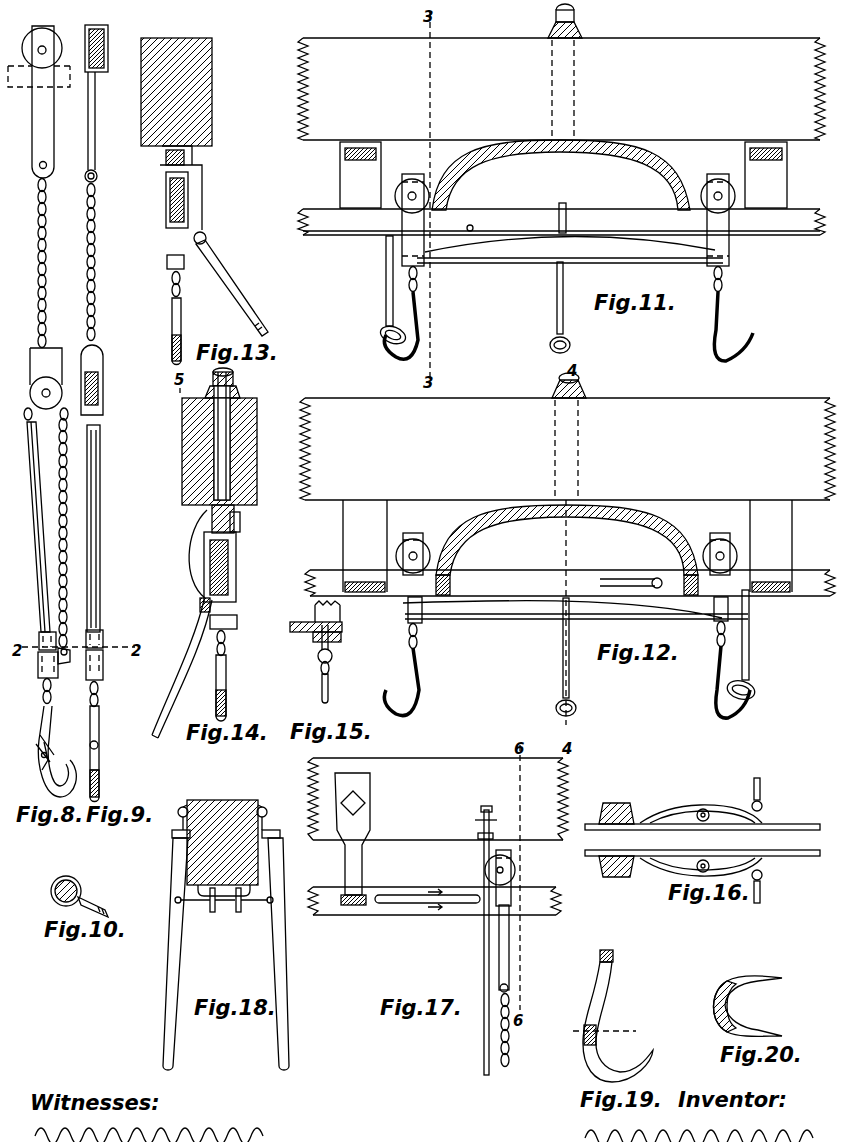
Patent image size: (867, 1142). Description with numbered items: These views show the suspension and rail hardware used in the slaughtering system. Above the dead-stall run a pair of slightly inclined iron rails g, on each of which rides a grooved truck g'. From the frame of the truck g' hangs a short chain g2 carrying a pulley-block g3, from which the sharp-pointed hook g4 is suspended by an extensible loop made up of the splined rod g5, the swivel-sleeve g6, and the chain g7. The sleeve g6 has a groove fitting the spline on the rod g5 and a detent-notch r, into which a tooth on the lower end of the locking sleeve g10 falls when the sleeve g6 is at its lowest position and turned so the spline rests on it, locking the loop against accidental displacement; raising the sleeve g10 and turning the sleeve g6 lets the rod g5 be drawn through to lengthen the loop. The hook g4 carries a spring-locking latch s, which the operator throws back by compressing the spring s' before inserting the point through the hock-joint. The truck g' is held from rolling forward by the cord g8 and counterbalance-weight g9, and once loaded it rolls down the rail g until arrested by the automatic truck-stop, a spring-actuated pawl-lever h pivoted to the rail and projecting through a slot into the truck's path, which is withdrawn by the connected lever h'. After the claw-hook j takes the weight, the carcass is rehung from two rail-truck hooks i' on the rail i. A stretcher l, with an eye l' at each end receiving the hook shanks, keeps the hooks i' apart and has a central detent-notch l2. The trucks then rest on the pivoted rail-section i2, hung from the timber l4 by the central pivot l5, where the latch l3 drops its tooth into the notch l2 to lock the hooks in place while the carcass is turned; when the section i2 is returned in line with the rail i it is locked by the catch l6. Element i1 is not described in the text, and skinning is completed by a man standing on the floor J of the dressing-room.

In FIG. 17, the inclined iron rail g is at (434, 901).
In FIG. 16, the inclined iron rail g is at (702, 839).
In FIG. 18, the inclined iron rail g is at (225, 890).
In FIG. 8, the grooved truck g' is at (42, 101).
In FIG. 9, the grooved truck g' is at (106, 103).
In FIG. 17, the grooved truck g' is at (515, 878).
In FIG. 9, the short chain g2 is at (103, 262).
In FIG. 17, the short chain g2 is at (513, 986).
In FIG. 8, the pulley-block g3 is at (46, 384).
In FIG. 9, the pulley-block g3 is at (103, 380).
In FIG. 8, the sharp-pointed hook g4 is at (30, 788).
In FIG. 9, the sharp-pointed hook g4 is at (107, 780).
In FIG. 8, the splined rod g5 is at (32, 510).
In FIG. 9, the splined rod g5 is at (105, 528).
In FIG. 10, the splined rod g5 is at (51, 889).
In FIG. 9, the swivel-sleeve g6 is at (103, 668).
In FIG. 10, the swivel-sleeve g6 is at (82, 889).
In FIG. 8, the chain g7 is at (74, 533).
In FIG. 8, the cord g8 is at (39, 641).
In FIG. 8, the counterbalance-weight g9 is at (39, 678).
In FIG. 9, the locking sleeve g10 is at (103, 641).
In FIG. 8, the detent-notch r is at (70, 660).
In FIG. 8, the spring-locking latch s is at (51, 756).
In FIG. 8, the spring s' is at (35, 719).
In FIG. 9, the spring s' is at (105, 754).
In FIG. 17, the pawl-lever h is at (427, 889).
In FIG. 16, the pawl-lever h is at (701, 840).
In FIG. 18, the pawl-lever h is at (224, 915).
In FIG. 17, the lever h' is at (484, 940).
In FIG. 16, the lever h' is at (764, 839).
In FIG. 18, the lever h' is at (229, 954).
In FIG. 11, the rail i is at (561, 222).
In FIG. 12, the rail i is at (570, 583).
In FIG. 13, the rail-truck hook i' is at (167, 318).
In FIG. 14, the rail-truck hook i' is at (228, 676).
In FIG. 15, the rail-truck hook i' is at (336, 661).
In FIG. 11, the rail-truck hook i' is at (568, 314).
In FIG. 12, the rail-truck hook i' is at (567, 670).
In FIG. 13, the spring housing i1 is at (168, 226).
In FIG. 11, the pivoted rail-section i2 is at (485, 220).
In FIG. 12, the pivoted rail-section i2 is at (489, 582).
In FIG. 19, the claw-hook j is at (618, 1016).
In FIG. 20, the floor of the dressing-room J is at (747, 1006).
In FIG. 13, the stretcher l is at (167, 264).
In FIG. 14, the stretcher l is at (230, 626).
In FIG. 15, the stretcher l is at (315, 621).
In FIG. 11, the stretcher l is at (570, 294).
In FIG. 12, the stretcher l is at (575, 655).
In FIG. 12, the eye or socket l' is at (564, 615).
In FIG. 14, the detent-notch l2 is at (236, 612).
In FIG. 11, the detent-notch l2 is at (561, 184).
In FIG. 12, the detent-notch l2 is at (567, 550).
In FIG. 14, the latch l3 is at (203, 606).
In FIG. 11, the latch l3 is at (562, 203).
In FIG. 12, the latch l3 is at (608, 579).
In FIG. 13, the timber l4 is at (186, 92).
In FIG. 14, the timber l4 is at (228, 451).
In FIG. 11, the timber l4 is at (561, 89).
In FIG. 12, the timber l4 is at (567, 449).
In FIG. 14, the central pivot l5 is at (214, 455).
In FIG. 11, the central pivot l5 is at (558, 70).
In FIG. 12, the central pivot l5 is at (576, 431).
In FIG. 13, the catch l6 is at (204, 237).
In FIG. 11, the catch l6 is at (391, 291).
In FIG. 12, the catch l6 is at (744, 646).